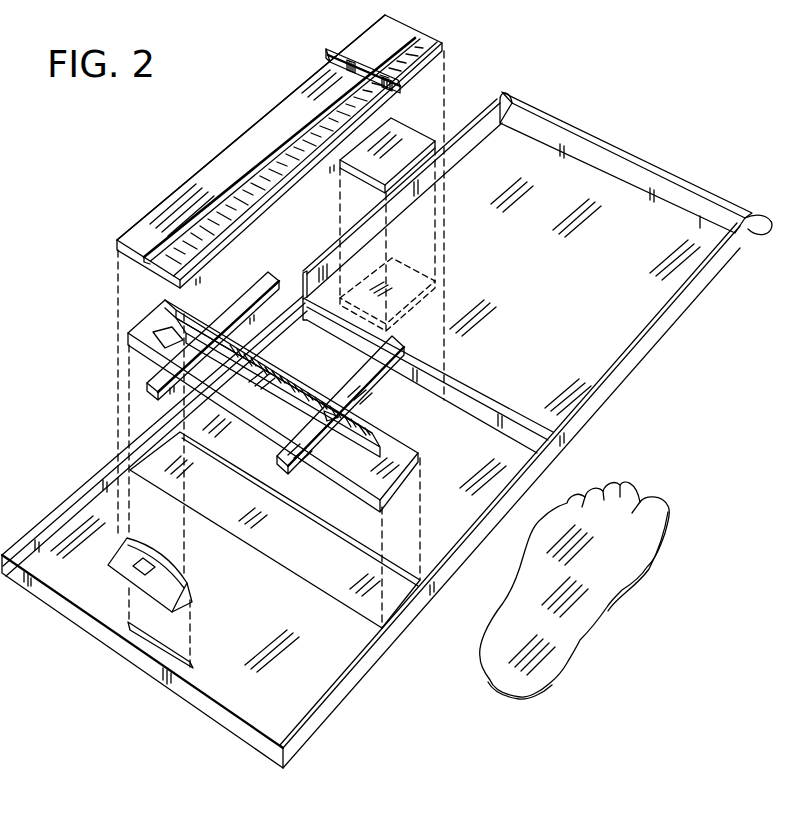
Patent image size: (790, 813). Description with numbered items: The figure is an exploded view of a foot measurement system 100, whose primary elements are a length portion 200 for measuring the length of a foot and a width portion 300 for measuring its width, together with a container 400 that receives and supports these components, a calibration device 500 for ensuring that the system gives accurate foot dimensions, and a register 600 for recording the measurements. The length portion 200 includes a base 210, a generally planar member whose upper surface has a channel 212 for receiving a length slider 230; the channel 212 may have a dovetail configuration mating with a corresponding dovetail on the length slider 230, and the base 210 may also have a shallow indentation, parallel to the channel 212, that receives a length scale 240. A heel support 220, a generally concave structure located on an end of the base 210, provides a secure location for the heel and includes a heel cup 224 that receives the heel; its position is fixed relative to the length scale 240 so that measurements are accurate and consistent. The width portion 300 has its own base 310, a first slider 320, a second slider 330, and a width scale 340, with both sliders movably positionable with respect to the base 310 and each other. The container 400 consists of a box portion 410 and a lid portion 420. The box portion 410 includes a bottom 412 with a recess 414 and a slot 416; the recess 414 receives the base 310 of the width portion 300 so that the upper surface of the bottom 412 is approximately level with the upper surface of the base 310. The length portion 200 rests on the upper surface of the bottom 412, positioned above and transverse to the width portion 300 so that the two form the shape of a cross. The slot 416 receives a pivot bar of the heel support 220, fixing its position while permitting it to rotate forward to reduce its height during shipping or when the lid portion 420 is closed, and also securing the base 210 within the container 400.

The foot measurement system 100 is at (87, 427).
The length portion 200 is at (172, 190).
The base 210 is at (231, 152).
The channel 212 is at (262, 120).
The heel support 220 is at (194, 589).
The heel cup 224 is at (148, 555).
The length slider 230 is at (347, 63).
The length scale 240 is at (236, 216).
The width portion 300 is at (402, 441).
The base 310 is at (348, 463).
The first slider 320 is at (238, 303).
The second slider 330 is at (334, 394).
The width scale 340 is at (265, 376).
The container 400 is at (363, 681).
The box portion 410 is at (232, 732).
The bottom 412 is at (280, 710).
The recess 414 is at (390, 593).
The slot 416 is at (163, 650).
The lid portion 420 is at (652, 330).
The calibration device 500 is at (611, 612).
The register 600 is at (408, 124).